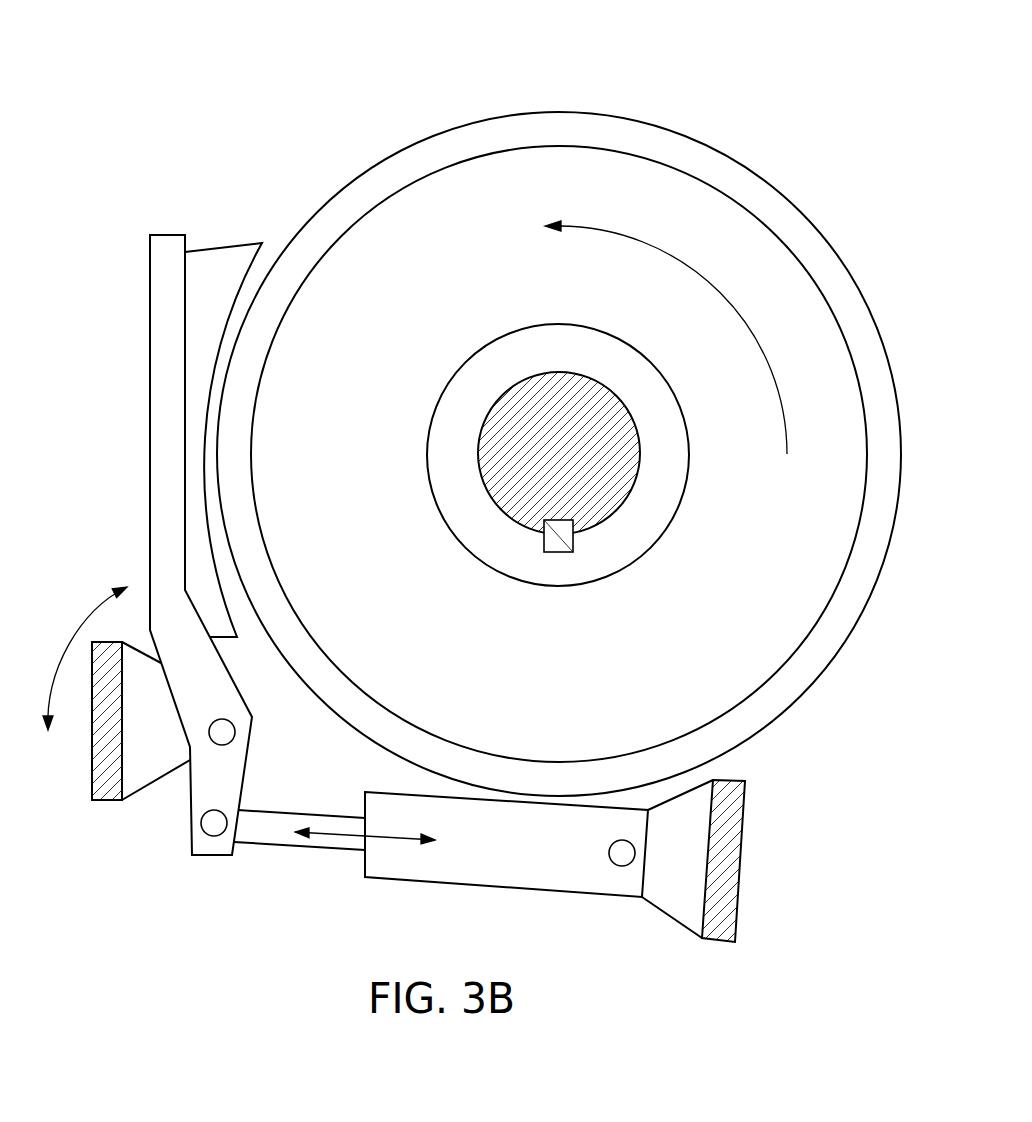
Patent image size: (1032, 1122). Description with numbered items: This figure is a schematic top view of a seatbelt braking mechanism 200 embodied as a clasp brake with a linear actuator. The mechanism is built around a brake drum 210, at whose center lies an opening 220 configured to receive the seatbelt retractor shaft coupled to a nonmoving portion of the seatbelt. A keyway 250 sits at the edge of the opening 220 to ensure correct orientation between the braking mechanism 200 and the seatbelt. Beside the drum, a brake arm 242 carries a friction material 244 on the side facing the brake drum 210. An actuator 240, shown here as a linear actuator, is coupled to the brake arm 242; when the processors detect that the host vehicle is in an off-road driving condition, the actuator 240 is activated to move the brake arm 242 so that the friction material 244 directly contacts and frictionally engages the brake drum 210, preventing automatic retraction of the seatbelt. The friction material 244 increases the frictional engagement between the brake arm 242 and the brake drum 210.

The seatbelt braking mechanism 200 is at (472, 500).
The brake drum 210 is at (558, 112).
The opening 220 is at (637, 480).
The actuator 240 is at (272, 848).
The brake arm 242 is at (150, 287).
The friction material 244 is at (218, 250).
The keyway 250 is at (563, 552).